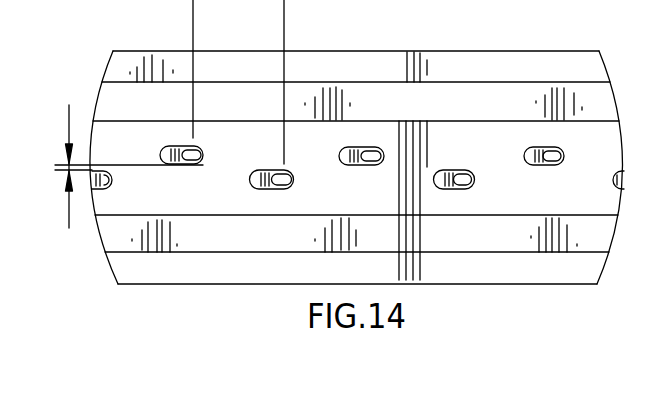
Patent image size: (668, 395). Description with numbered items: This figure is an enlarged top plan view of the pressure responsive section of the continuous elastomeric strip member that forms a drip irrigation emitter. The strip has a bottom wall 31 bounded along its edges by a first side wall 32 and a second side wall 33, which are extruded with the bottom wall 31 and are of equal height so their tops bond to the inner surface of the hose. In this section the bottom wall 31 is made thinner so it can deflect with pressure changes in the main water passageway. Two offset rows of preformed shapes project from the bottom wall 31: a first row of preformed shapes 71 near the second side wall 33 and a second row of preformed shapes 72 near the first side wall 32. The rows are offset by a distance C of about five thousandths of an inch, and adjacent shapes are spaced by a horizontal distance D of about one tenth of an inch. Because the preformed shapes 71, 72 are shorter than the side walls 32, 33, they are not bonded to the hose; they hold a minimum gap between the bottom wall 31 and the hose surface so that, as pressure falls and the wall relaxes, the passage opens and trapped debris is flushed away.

The bottom wall 31 is at (337, 207).
The first side wall 32 is at (567, 237).
The second side wall 33 is at (406, 97).
The preformed shapes 71 is at (534, 153).
The preformed shapes 72 is at (262, 178).
The offset distance C is at (69, 210).
The horizontal distance D is at (147, 0).